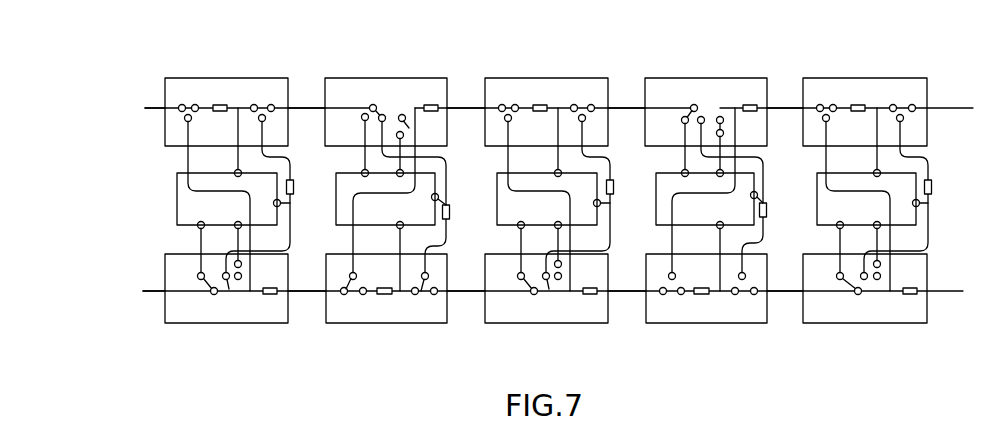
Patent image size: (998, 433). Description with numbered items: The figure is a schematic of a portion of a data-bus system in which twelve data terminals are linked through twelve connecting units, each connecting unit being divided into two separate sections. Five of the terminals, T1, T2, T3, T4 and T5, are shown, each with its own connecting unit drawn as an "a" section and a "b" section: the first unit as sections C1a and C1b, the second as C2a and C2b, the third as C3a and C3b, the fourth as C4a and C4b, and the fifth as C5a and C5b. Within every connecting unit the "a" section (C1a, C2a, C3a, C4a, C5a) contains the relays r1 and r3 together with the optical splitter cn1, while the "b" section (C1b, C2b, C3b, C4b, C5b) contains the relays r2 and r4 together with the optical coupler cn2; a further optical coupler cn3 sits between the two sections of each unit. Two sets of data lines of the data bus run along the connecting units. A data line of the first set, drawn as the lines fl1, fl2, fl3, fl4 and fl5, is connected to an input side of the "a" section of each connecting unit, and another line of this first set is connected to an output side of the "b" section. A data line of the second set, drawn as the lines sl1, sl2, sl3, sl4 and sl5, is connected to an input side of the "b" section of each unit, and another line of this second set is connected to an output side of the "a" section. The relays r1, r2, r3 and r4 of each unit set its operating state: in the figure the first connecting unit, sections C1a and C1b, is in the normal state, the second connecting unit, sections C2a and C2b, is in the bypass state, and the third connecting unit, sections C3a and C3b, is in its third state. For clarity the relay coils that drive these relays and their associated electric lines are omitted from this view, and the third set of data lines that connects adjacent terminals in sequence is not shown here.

The first section of first connecting unit C1a is at (260, 78).
The second section of first connecting unit C1b is at (265, 323).
The first section of second connecting unit C2a is at (402, 318).
The second section of second connecting unit C2b is at (435, 84).
The first section of third connecting unit C3a is at (598, 86).
The second section of third connecting unit C3b is at (596, 323).
The first section of fourth connecting unit C4a is at (751, 320).
The second section of fourth connecting unit C4b is at (743, 86).
The first section of fifth connecting unit C5a is at (914, 84).
The second section of fifth connecting unit C5b is at (915, 320).
The data terminal T1 is at (227, 199).
The data terminal T2 is at (385, 199).
The data terminal T3 is at (547, 199).
The data terminal T4 is at (705, 199).
The data terminal T5 is at (866, 199).
The first line segment fl1 is at (153, 99).
The first line segment fl2 is at (308, 296).
The first line segment fl3 is at (468, 112).
The first line segment fl4 is at (626, 288).
The first line segment fl5 is at (790, 104).
The second line segment sl1 is at (153, 288).
The second line segment sl2 is at (300, 130).
The second line segment sl3 is at (464, 288).
The second line segment sl4 is at (626, 114).
The second line segment sl5 is at (784, 288).
The relay r1 is at (194, 104).
The relay r2 is at (205, 296).
The relay r3 is at (266, 104).
The relay r4 is at (416, 58).
The optical splitter cn1 is at (224, 104).
The optical coupler cn2 is at (282, 272).
The optical coupler cn3 is at (294, 190).